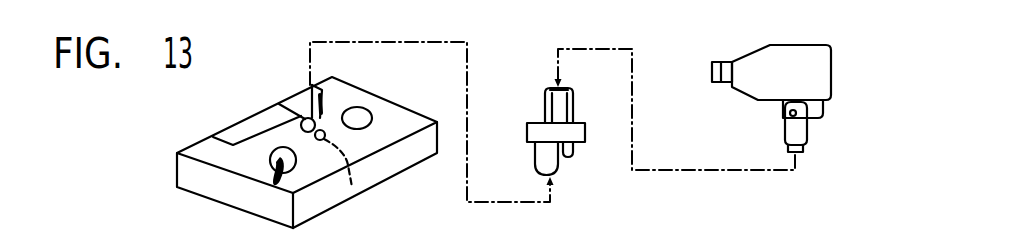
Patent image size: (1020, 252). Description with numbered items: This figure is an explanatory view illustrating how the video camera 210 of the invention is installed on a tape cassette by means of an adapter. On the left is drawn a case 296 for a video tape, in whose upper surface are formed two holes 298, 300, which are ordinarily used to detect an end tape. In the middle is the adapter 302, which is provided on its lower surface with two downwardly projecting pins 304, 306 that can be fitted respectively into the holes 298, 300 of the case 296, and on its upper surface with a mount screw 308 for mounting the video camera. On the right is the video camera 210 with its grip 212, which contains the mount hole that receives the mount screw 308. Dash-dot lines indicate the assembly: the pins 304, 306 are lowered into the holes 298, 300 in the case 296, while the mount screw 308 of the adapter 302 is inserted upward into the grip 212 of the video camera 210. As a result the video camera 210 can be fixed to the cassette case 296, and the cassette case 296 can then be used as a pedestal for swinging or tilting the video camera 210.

The video camera 210 is at (813, 86).
The grip 212 is at (781, 128).
The case 296 is at (208, 150).
The hole 298 is at (278, 104).
The hole 300 is at (352, 187).
The adapter 302 is at (537, 123).
The pin 304 is at (541, 166).
The pin 306 is at (571, 155).
The mount screw 308 is at (560, 96).